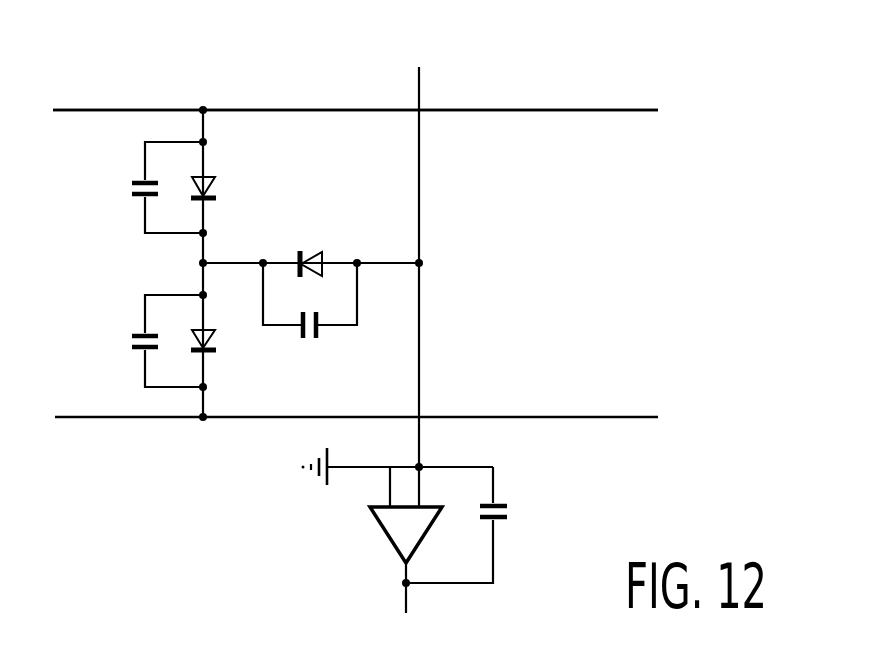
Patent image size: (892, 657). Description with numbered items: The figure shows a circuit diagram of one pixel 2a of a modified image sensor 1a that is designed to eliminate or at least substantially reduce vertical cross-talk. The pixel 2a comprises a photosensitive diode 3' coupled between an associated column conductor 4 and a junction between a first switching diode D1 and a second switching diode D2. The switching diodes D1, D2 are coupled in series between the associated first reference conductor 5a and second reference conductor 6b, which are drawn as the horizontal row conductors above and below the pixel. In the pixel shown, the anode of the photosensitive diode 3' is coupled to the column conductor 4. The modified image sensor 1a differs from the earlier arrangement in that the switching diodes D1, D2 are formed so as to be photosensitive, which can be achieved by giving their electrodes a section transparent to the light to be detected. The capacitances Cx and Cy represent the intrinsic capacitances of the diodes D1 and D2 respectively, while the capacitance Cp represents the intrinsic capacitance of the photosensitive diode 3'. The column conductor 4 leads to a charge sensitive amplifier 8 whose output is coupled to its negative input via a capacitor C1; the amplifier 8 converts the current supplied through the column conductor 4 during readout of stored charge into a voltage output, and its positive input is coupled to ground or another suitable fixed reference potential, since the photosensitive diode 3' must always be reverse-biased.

The modified image sensor 1a is at (610, 92).
The first reference conductor 5a is at (507, 111).
The second reference conductor 6b is at (508, 418).
The column conductor 4 is at (420, 317).
The pixel 2a is at (470, 262).
The photosensitive diode 3' is at (332, 238).
The capacitance Cp is at (322, 335).
The capacitance Cx is at (132, 190).
The capacitance Cy is at (132, 342).
The first switching diode D1 is at (272, 185).
The second switching diode D2 is at (213, 340).
The charge sensitive amplifier 8 is at (397, 533).
The capacitor C1 is at (508, 516).